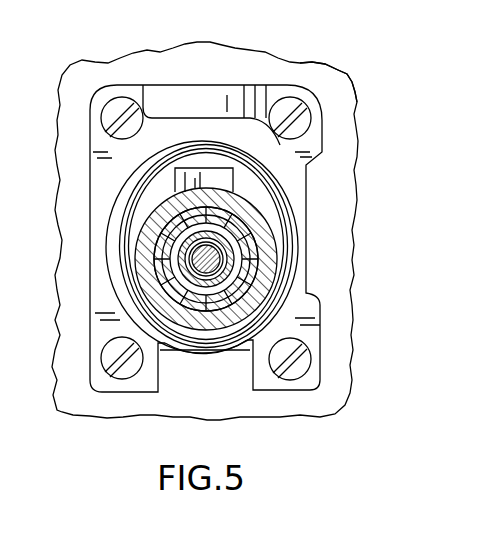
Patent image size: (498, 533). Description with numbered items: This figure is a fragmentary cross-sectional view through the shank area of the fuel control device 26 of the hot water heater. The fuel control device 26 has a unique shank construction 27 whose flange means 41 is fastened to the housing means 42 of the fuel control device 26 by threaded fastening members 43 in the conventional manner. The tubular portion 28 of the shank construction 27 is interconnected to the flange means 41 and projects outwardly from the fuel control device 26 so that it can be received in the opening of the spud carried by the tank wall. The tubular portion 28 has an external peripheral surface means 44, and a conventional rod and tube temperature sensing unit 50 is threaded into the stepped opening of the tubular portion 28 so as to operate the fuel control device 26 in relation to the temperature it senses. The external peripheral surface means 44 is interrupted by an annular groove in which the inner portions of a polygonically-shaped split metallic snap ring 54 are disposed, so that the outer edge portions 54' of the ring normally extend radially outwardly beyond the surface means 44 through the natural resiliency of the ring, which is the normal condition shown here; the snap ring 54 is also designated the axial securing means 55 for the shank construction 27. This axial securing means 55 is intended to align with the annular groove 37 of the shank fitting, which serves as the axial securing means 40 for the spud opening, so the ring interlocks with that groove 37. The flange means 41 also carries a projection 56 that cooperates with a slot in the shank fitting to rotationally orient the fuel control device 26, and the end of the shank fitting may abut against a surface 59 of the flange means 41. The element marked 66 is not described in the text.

The fuel control device 26 is at (320, 401).
The shank construction 27 is at (297, 206).
The tubular portion 28 is at (143, 253).
The annular groove 37 is at (192, 337).
The axial securing means 40 is at (265, 258).
The flange means 41 is at (100, 167).
The housing means 42 is at (322, 73).
The threaded fastening members 43 is at (308, 118).
The external peripheral surface means 44 is at (263, 241).
The rod and tube temperature sensing unit 50 is at (250, 283).
The split metallic snap ring 54 is at (148, 256).
The outer edge portions 54' is at (167, 104).
The axial securing means 55 is at (258, 203).
The projection 56 is at (207, 167).
The surface 59 is at (236, 350).
The adjacent component 66 is at (497, 118).